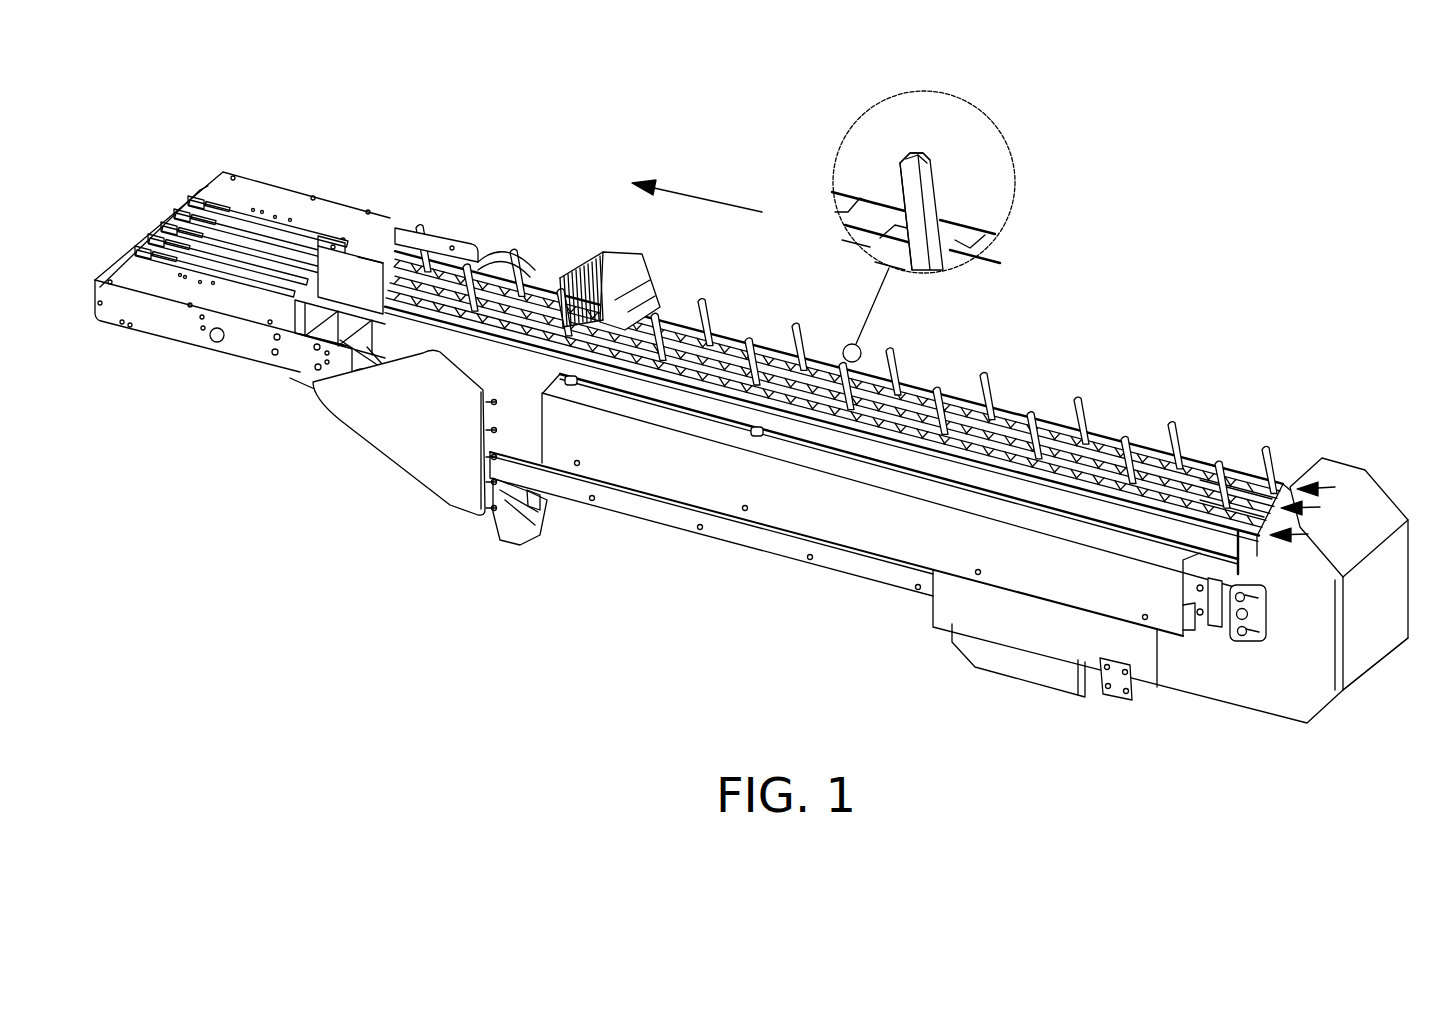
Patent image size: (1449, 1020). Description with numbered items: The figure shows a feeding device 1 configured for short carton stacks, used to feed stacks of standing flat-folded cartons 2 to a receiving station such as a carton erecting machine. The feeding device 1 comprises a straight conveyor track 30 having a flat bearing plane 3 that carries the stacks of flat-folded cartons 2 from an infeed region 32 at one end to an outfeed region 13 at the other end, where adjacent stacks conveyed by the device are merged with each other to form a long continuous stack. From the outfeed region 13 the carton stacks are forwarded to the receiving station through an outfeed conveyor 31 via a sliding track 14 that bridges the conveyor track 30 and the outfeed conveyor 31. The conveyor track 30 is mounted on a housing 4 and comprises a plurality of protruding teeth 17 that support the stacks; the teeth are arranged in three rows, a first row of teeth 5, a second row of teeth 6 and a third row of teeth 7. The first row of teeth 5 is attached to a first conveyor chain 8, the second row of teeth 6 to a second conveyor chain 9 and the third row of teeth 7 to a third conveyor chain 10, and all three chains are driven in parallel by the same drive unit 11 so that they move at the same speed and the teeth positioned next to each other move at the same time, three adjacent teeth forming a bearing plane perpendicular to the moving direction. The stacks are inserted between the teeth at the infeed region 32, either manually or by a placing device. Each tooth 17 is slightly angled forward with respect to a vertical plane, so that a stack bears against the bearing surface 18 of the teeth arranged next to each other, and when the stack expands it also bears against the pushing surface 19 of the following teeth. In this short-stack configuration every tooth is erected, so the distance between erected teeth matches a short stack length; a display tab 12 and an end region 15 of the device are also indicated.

The feeding device 1 is at (1090, 212).
The stack of flat-folded cartons 2 is at (640, 307).
The bearing plane 3 is at (700, 318).
The housing 4 is at (1200, 662).
The first row of teeth 5 is at (1322, 488).
The second row of teeth 6 is at (1312, 508).
The third row of teeth 7 is at (1302, 535).
The first conveyor chain 8 is at (1253, 480).
The second conveyor chain 9 is at (1200, 463).
The third conveyor chain 10 is at (1150, 455).
The drive unit 11 is at (521, 250).
The display tab 12 is at (628, 283).
The outfeed region 13 is at (486, 210).
The sliding track 14 is at (388, 256).
The end region 15 is at (337, 455).
The tooth 17 is at (918, 152).
The bearing surface 18 is at (932, 184).
The pushing surface 19 is at (903, 183).
The conveyor track 30 is at (977, 396).
The outfeed conveyor 31 is at (178, 185).
The infeed region 32 is at (1296, 362).